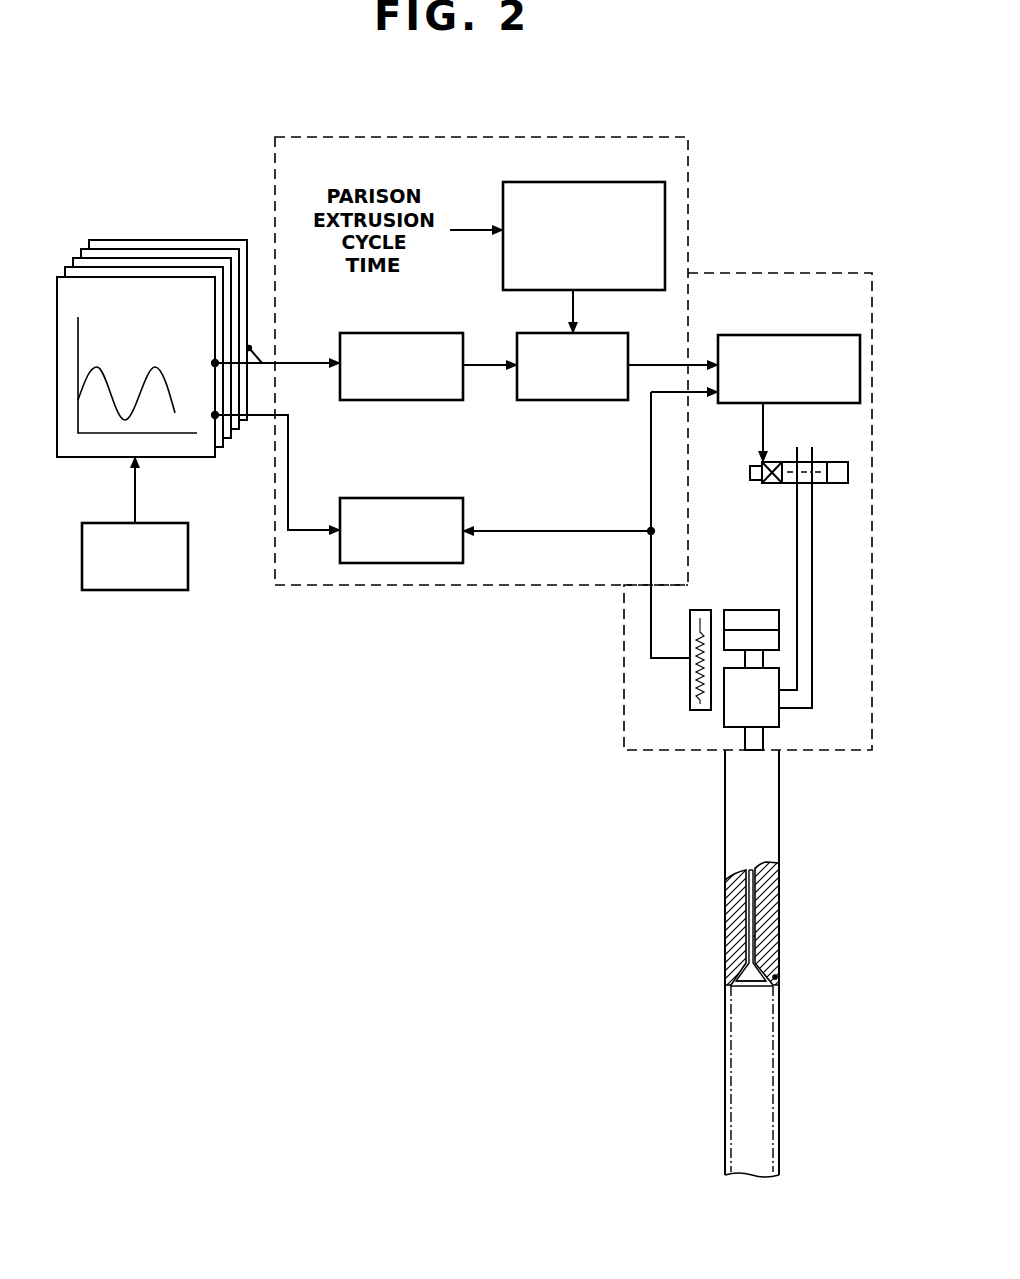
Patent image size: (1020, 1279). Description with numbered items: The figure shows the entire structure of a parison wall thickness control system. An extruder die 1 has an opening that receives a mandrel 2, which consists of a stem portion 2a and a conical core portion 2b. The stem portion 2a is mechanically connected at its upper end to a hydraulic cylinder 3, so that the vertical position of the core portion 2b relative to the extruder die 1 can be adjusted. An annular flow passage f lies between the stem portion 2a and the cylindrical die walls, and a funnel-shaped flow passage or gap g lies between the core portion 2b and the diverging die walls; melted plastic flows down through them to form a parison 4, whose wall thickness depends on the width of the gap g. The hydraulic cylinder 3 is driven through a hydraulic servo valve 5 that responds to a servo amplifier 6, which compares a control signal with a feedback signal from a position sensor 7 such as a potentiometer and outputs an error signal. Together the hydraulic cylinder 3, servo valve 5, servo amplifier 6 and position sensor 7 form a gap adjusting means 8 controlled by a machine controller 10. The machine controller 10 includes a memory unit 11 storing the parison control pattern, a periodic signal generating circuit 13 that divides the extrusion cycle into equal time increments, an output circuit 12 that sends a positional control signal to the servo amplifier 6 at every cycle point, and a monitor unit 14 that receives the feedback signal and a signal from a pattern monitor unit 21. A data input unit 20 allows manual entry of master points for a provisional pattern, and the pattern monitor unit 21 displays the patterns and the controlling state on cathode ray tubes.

The extruder die 1 is at (779, 905).
The mandrel 2 is at (742, 990).
The stem portion 2a is at (753, 878).
The core portion 2b is at (760, 986).
The hydraulic cylinder 3 is at (724, 727).
The parison 4 is at (723, 1089).
The hydraulic servo valve 5 is at (787, 483).
The servo amplifier 6 is at (777, 335).
The position sensor 7 is at (690, 687).
The gap adjusting means 8 is at (745, 273).
The machine controller 10 is at (373, 585).
The memory unit 11 is at (331, 334).
The output circuit 12 is at (617, 333).
The periodic signal generating circuit 13 is at (603, 182).
The monitor unit 14 is at (422, 498).
The data input unit 20 is at (170, 590).
The pattern monitor unit 21 is at (172, 277).
The annular flow passage f is at (758, 936).
The flow passage or gap g is at (775, 977).